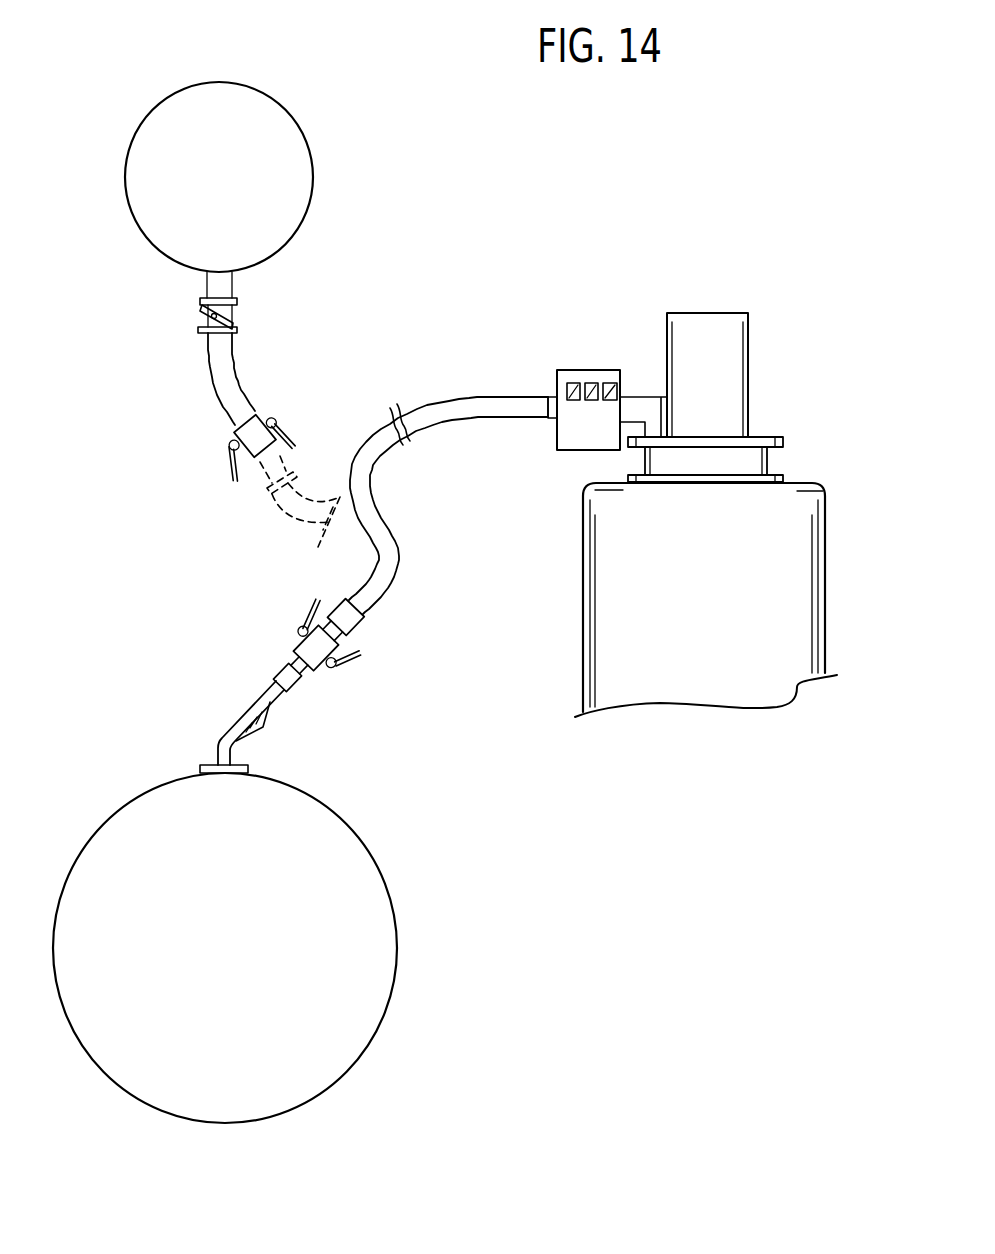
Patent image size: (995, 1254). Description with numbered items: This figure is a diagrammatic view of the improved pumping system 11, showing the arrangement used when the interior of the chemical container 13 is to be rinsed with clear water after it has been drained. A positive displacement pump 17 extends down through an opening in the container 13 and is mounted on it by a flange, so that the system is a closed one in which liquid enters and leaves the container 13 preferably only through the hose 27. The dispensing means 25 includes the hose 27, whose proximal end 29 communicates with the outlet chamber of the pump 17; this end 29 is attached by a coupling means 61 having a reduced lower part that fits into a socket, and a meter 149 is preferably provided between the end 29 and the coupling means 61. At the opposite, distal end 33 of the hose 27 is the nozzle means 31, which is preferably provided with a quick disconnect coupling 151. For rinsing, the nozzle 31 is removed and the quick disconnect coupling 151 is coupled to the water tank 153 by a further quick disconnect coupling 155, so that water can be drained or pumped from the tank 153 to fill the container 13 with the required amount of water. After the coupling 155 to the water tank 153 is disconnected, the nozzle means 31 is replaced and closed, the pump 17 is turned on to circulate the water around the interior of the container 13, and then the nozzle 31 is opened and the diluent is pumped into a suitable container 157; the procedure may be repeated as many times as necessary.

The pumping system 11 is at (588, 258).
The container 13 is at (802, 542).
The positive displacement pump 17 is at (772, 412).
The dispensing means 25 is at (448, 384).
The hose 27 is at (417, 420).
The proximal end of hose 29 is at (522, 402).
The nozzle means 31 is at (267, 718).
The distal end of hose 33 is at (370, 592).
The coupling means 61 is at (636, 410).
The meter 149 is at (580, 440).
The quick disconnect coupling 151 is at (367, 642).
The water tank 153 is at (276, 178).
The quick disconnect coupling 155 is at (288, 408).
The container 157 is at (348, 908).